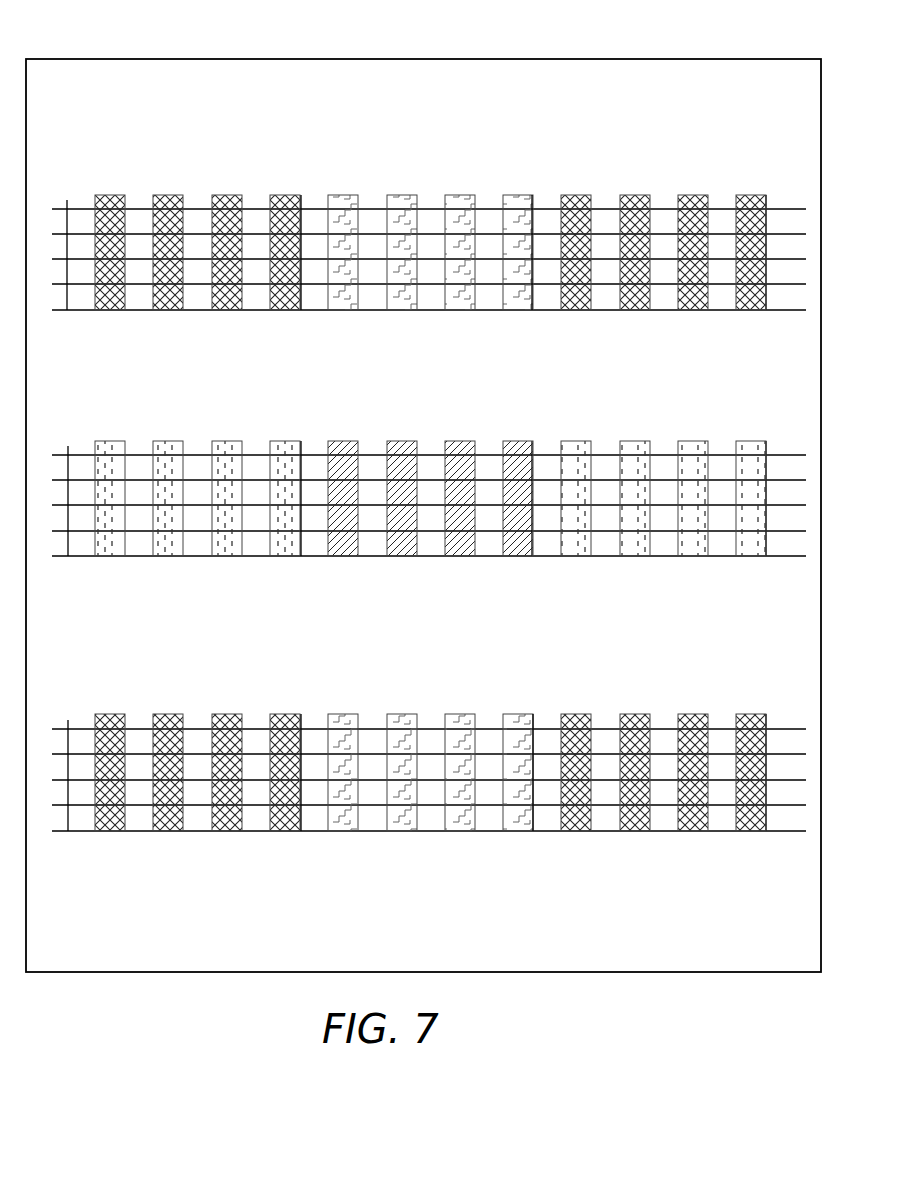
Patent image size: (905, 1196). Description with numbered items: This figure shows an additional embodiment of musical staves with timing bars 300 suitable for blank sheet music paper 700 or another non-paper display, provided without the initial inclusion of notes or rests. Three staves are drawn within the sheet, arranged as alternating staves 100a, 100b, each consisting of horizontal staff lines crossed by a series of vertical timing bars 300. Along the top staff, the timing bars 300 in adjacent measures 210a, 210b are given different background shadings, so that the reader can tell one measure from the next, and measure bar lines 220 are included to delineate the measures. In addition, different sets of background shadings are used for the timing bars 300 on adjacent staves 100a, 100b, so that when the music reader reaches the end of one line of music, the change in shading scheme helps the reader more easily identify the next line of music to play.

The blank sheet music paper 700 is at (95, 58).
The first musical staff 100a is at (50, 240).
The second musical staff 100b is at (50, 493).
The first measure 210a is at (300, 312).
The second measure 210b is at (532, 312).
The measure bar line 220 is at (301, 195).
The timing bar 300 is at (664, 195).